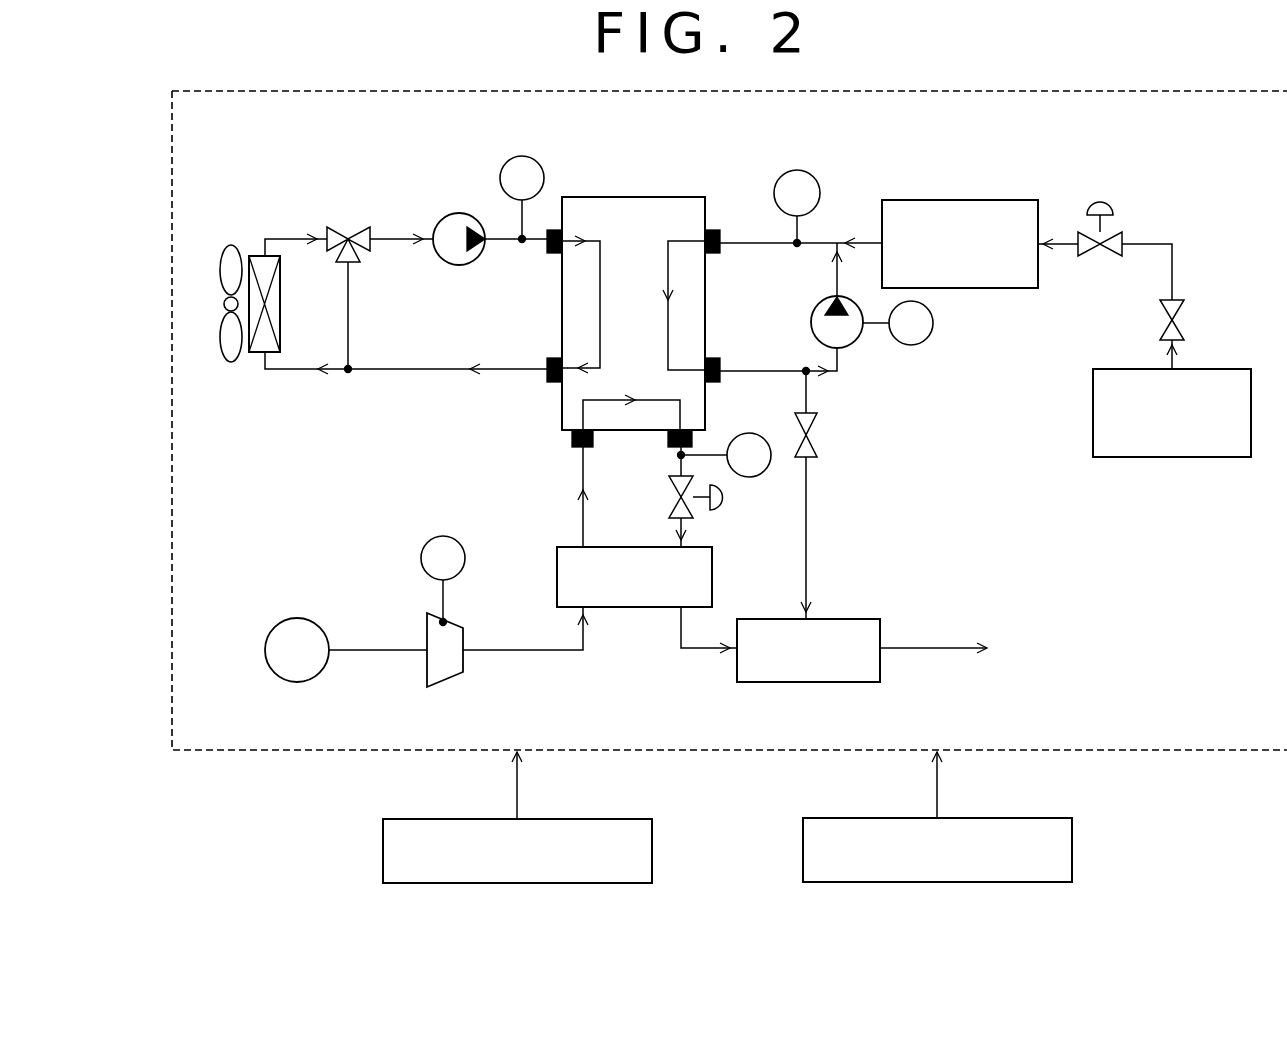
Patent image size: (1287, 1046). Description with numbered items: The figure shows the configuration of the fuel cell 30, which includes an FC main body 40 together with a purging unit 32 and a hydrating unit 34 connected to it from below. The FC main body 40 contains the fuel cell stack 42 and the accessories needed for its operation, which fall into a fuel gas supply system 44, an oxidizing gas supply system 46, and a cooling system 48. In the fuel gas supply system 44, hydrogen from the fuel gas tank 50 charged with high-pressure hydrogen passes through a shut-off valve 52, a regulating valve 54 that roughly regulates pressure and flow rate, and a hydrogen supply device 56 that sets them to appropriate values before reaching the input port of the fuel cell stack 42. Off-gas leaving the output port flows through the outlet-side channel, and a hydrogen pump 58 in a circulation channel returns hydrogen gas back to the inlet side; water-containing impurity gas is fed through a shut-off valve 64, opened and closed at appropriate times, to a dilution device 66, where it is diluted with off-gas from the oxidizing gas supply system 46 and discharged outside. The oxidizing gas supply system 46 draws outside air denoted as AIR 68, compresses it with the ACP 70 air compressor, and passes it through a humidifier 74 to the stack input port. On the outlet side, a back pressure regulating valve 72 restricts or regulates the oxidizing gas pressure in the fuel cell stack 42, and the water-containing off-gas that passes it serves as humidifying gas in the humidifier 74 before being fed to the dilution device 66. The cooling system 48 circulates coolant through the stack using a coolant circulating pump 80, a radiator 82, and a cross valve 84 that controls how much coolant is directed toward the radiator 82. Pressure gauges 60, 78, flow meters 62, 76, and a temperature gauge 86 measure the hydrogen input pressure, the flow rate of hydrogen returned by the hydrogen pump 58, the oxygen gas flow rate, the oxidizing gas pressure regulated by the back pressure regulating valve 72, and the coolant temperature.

The fuel cell 30 is at (237, 782).
The purging unit 32 is at (383, 852).
The hydrating unit 34 is at (1072, 848).
The FC main body 40 is at (1215, 752).
The fuel cell stack 42 is at (638, 195).
The fuel gas supply system 44 is at (988, 433).
The oxidizing gas supply system 46 is at (355, 527).
The cooling system 48 is at (277, 210).
The fuel gas tank 50 is at (1172, 457).
The shut-off valve 52 is at (1183, 315).
The regulating valve 54 is at (1113, 226).
The hydrogen supply device 56 is at (962, 200).
The hydrogen pump 58 is at (810, 323).
The pressure gauge 60 is at (817, 174).
The flow meter 62 is at (928, 337).
The shut-off valve 64 is at (820, 433).
The dilution device 66 is at (808, 683).
The AIR 68 is at (294, 618).
The ACP 70 is at (447, 685).
The back pressure regulating valve 72 is at (703, 515).
The humidifier 74 is at (633, 608).
The flow meter 76 is at (453, 540).
The pressure gauge 78 is at (762, 476).
The coolant circulating pump 80 is at (459, 265).
The radiator 82 is at (246, 368).
The cross valve 84 is at (348, 225).
The temperature gauge 86 is at (503, 168).